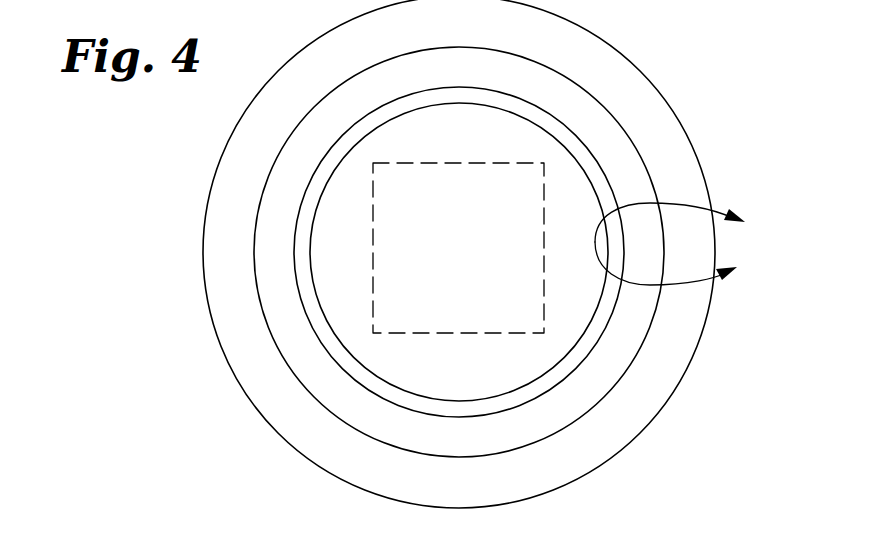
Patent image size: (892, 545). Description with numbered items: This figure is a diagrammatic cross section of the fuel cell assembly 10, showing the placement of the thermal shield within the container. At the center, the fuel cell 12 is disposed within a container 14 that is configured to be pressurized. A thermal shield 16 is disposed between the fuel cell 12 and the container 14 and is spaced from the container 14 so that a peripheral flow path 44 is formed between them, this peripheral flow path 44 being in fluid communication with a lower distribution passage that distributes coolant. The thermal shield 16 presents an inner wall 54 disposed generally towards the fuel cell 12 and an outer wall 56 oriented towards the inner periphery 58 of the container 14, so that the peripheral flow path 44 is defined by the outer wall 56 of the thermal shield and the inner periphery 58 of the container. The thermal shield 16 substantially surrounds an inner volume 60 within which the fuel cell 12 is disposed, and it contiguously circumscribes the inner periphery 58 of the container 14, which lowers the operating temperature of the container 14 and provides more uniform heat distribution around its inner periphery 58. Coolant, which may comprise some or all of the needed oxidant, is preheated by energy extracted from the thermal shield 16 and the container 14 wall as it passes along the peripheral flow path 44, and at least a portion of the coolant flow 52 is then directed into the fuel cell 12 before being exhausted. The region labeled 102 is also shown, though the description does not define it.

The fuel cell assembly 10 is at (147, 407).
The fuel cell 12 is at (458, 248).
The container 14 is at (218, 248).
The thermal shield 16 is at (301, 273).
The peripheral flow path 44 is at (275, 177).
The coolant flow 52 is at (528, 163).
The inner wall 54 is at (313, 282).
The outer wall 56 is at (330, 355).
The inner periphery 58 is at (498, 447).
The inner volume 60 is at (517, 360).
The thermal interface region 102 is at (547, 303).